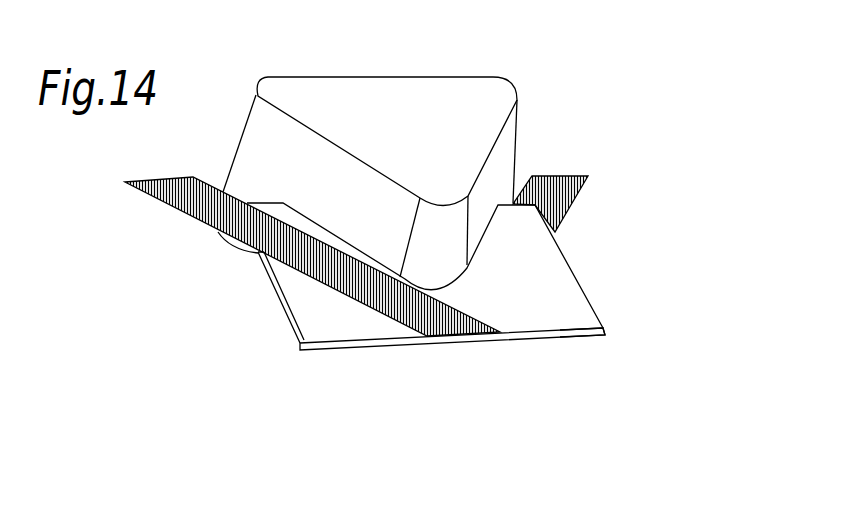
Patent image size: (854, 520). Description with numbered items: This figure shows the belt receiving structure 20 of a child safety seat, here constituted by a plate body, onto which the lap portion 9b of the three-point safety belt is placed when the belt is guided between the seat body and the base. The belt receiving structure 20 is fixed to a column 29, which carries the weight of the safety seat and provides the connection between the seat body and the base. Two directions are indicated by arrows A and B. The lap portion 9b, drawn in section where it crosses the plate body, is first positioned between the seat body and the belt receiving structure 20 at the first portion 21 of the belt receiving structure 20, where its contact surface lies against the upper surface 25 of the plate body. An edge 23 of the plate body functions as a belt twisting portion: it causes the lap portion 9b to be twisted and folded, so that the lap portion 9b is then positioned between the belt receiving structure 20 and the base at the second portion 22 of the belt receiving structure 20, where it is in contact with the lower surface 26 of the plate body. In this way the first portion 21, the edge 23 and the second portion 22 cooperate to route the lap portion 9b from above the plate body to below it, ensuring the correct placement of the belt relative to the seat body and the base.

The lap portion 9b is at (170, 195).
The belt receiving structure 20 is at (446, 308).
The first portion 21 is at (402, 322).
The second portion 22 is at (600, 267).
The edge 23 is at (402, 342).
The upper surface 25 is at (295, 283).
The lower surface 26 is at (587, 330).
The column 29 is at (497, 95).
The direction A is at (322, 2).
The direction B is at (538, 457).